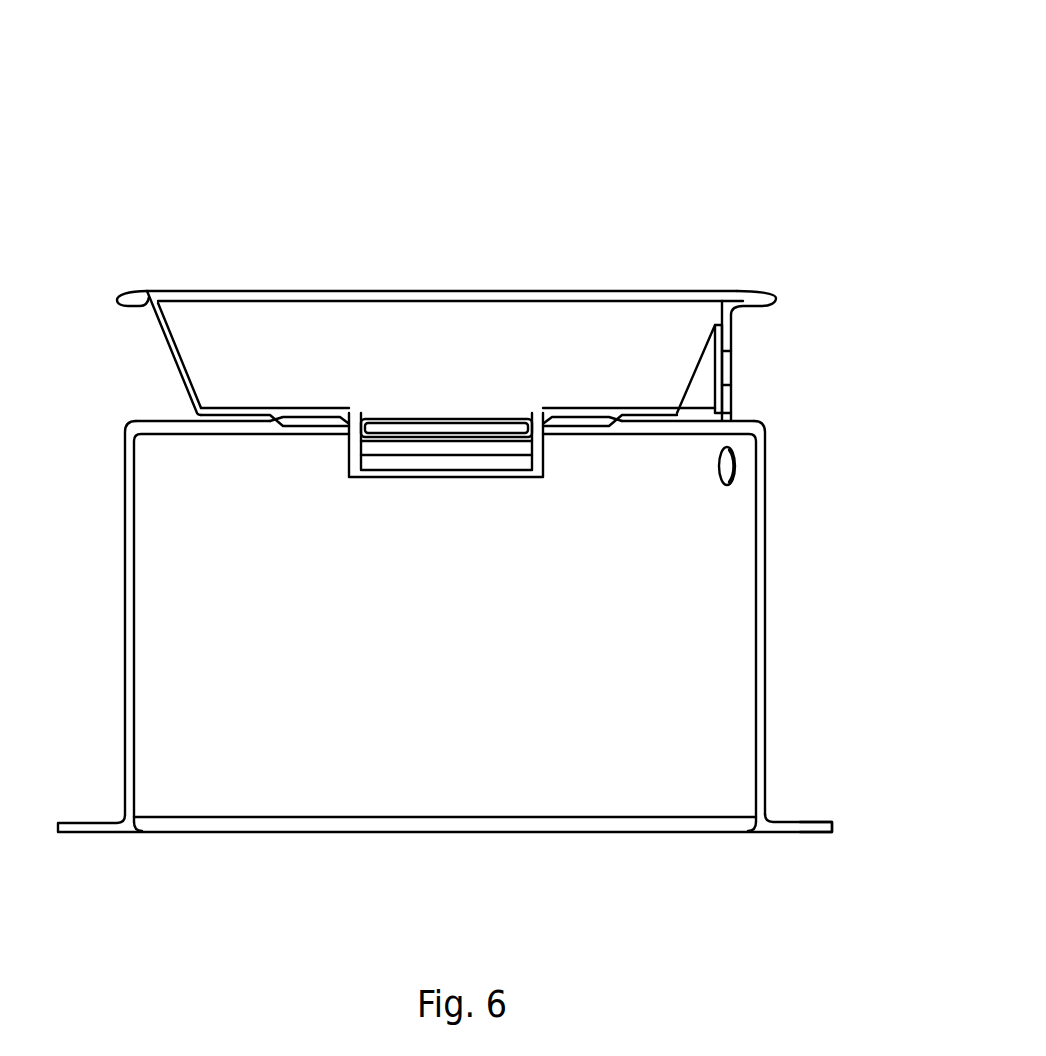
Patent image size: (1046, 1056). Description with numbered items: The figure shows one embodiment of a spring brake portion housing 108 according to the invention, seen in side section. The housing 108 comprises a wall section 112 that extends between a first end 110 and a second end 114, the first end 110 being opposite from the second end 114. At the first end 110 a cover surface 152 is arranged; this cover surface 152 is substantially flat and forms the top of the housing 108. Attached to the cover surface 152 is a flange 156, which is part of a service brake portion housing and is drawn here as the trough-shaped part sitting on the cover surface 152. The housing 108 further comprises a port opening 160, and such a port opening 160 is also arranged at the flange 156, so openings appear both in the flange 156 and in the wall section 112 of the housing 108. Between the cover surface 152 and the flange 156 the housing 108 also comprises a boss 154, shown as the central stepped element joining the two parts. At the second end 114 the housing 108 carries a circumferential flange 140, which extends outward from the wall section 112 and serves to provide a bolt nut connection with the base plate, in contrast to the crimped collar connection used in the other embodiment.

The spring brake portion housing 108 is at (171, 138).
The first end 110 is at (164, 396).
The wall section 112 is at (760, 623).
The second end 114 is at (767, 876).
The circumferential flange 140 is at (813, 823).
The cover surface 152 is at (152, 421).
The boss 154 is at (530, 452).
The flange 156 is at (186, 362).
The port opening 160 is at (728, 368).